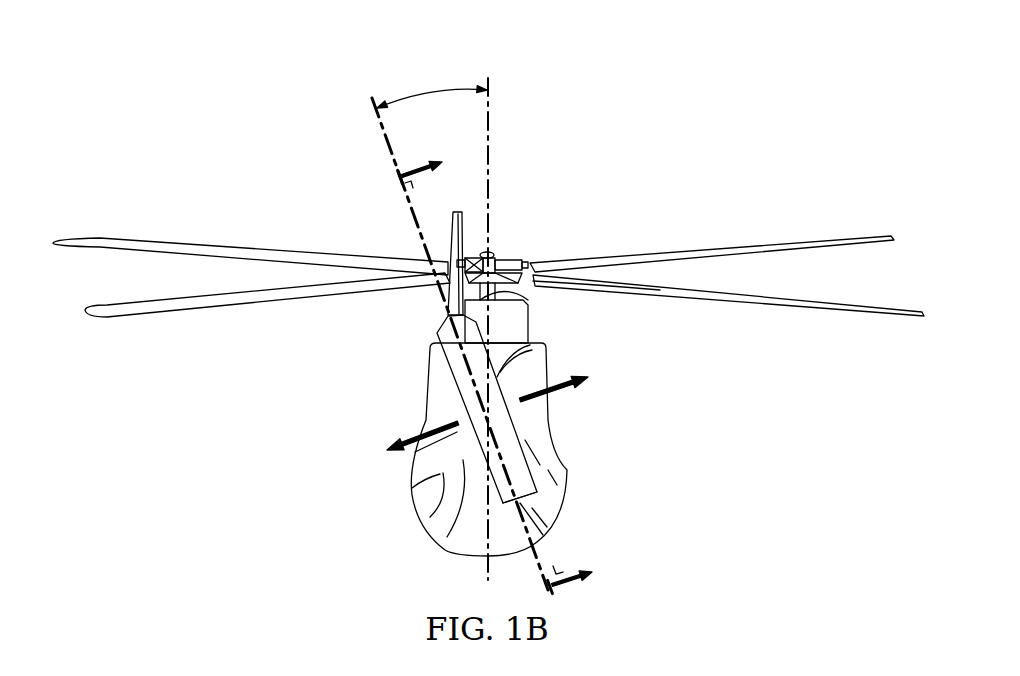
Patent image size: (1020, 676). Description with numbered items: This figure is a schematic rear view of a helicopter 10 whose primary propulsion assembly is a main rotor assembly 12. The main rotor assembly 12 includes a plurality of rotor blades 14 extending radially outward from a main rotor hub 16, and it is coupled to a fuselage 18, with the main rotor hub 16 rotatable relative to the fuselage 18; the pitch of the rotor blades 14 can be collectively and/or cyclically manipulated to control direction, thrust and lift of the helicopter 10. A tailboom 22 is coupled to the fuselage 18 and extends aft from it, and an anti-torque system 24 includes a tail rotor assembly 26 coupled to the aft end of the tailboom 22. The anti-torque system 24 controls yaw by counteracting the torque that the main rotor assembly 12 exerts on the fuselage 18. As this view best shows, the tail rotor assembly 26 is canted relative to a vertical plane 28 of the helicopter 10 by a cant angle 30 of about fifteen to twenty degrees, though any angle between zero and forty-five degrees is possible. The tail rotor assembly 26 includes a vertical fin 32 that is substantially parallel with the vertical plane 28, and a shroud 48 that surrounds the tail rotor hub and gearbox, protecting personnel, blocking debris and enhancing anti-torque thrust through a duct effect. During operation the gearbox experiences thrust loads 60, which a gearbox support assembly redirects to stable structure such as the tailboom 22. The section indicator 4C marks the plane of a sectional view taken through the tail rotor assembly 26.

The helicopter 10 is at (640, 176).
The main rotor assembly 12 is at (503, 218).
The rotor blades 14 is at (112, 245).
The main rotor hub 16 is at (513, 253).
The fuselage 18 is at (422, 522).
The tailboom 22 is at (412, 488).
The anti-torque system 24 is at (446, 386).
The tail rotor assembly 26 is at (553, 489).
The vertical plane 28 is at (528, 320).
The cant angle 30 is at (432, 90).
The vertical fin 32 is at (442, 219).
The shroud 48 is at (535, 457).
The thrust loads 60 is at (557, 390).
The section line 4C is at (515, 367).